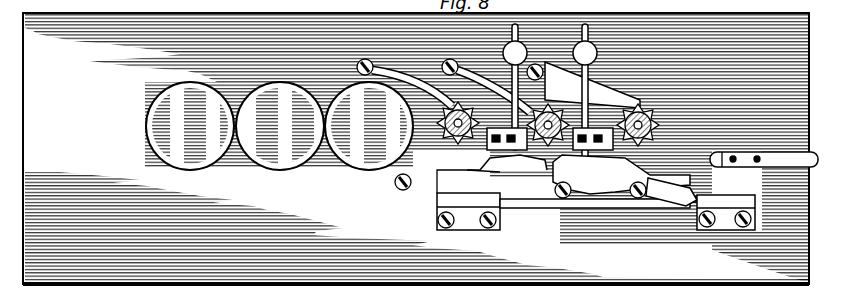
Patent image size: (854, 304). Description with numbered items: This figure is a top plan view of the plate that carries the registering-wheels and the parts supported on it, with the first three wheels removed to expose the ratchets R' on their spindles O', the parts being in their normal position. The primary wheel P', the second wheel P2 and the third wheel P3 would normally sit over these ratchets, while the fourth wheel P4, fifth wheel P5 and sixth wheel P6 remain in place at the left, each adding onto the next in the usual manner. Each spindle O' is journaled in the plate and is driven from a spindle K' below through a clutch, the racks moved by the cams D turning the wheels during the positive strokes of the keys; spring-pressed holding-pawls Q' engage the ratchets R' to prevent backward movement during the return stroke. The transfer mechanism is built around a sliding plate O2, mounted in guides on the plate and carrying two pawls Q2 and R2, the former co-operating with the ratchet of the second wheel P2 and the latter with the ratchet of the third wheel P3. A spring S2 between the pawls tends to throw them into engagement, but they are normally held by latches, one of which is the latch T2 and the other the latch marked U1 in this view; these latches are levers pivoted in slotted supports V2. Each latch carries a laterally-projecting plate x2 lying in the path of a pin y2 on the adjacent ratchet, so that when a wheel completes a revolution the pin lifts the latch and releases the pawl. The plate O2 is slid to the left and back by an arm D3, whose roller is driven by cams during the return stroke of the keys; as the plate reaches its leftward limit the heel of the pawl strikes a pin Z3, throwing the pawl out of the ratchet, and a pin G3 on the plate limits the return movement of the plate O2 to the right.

The sixth registering-wheel P6 is at (190, 137).
The fifth registering-wheel P5 is at (280, 138).
The fourth registering-wheel P4 is at (369, 137).
The holding-pawl Q' is at (463, 71).
The slotted support V2 is at (522, 46).
The latch T2 is at (608, 90).
The pin or cam y2 is at (648, 96).
The primary registering-wheel P' is at (679, 97).
The ratchet R' is at (555, 149).
The spindle O' is at (570, 156).
The arm D3 is at (782, 152).
The pawl U1 is at (512, 124).
The laterally-projecting plate x2 is at (550, 134).
The second registering-wheel P2 is at (550, 142).
The pawl R2 is at (560, 165).
The third registering-wheel P3 is at (438, 165).
The spindle K' is at (305, 215).
The spring S2 is at (621, 176).
The pin Z3 is at (583, 208).
The pawl Q2 is at (640, 208).
The sliding plate O2 is at (764, 169).
The cam D is at (770, 180).
The pin G3 is at (776, 172).